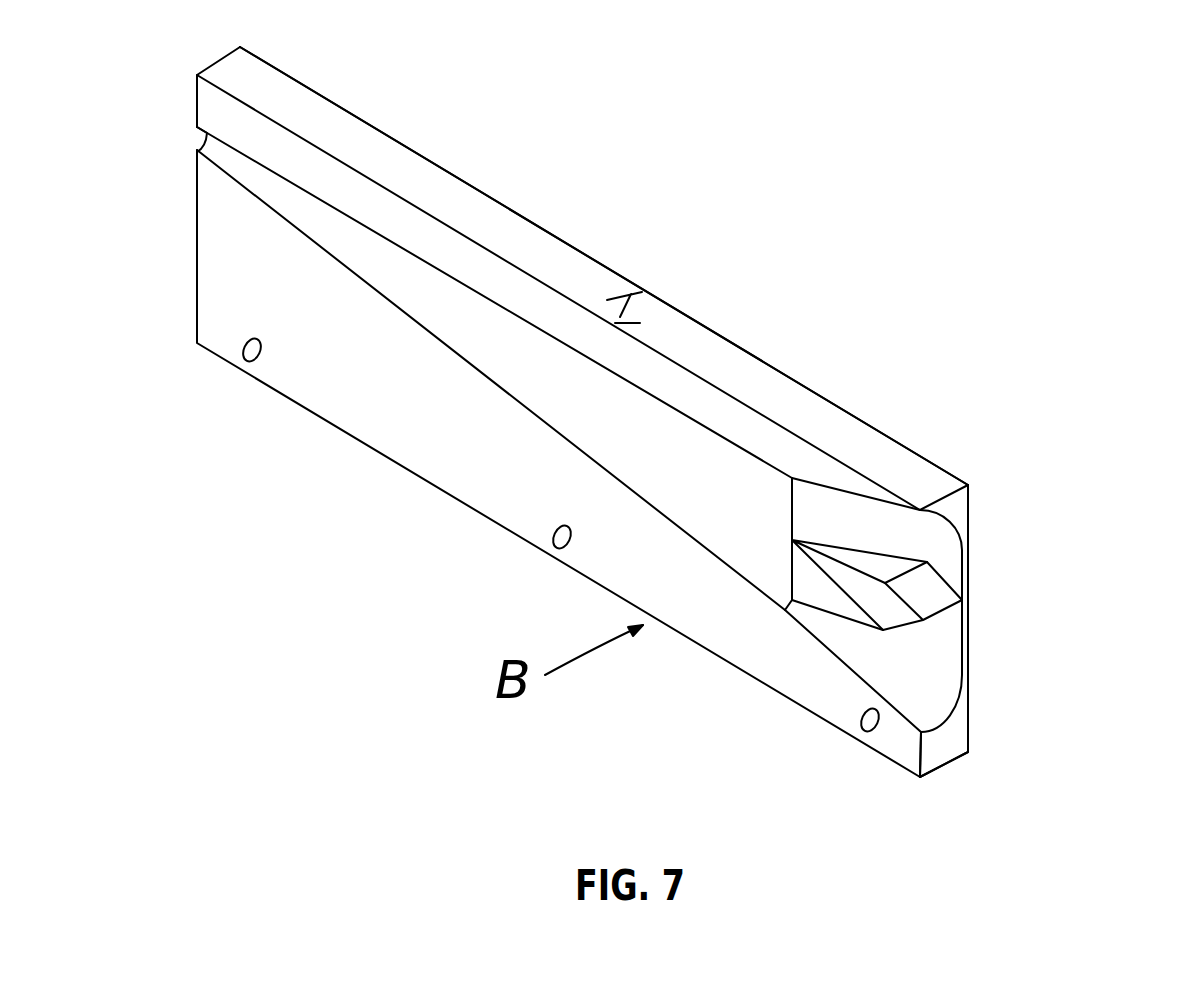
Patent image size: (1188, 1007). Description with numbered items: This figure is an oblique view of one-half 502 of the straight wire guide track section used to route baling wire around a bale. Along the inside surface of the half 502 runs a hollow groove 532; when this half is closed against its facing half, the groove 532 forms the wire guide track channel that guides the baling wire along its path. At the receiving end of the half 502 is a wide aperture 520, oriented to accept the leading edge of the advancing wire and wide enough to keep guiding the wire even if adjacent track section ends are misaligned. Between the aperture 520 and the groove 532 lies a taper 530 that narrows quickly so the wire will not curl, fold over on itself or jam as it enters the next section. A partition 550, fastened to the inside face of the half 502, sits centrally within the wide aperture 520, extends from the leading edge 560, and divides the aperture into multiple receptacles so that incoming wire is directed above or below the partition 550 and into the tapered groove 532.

The one-half of the straight wire guide track 502 is at (400, 551).
The wide aperture 520 is at (935, 645).
The taper 530 is at (800, 343).
The hollow groove 532 is at (323, 230).
The partition 550 is at (915, 592).
The leading edge 560 is at (967, 650).